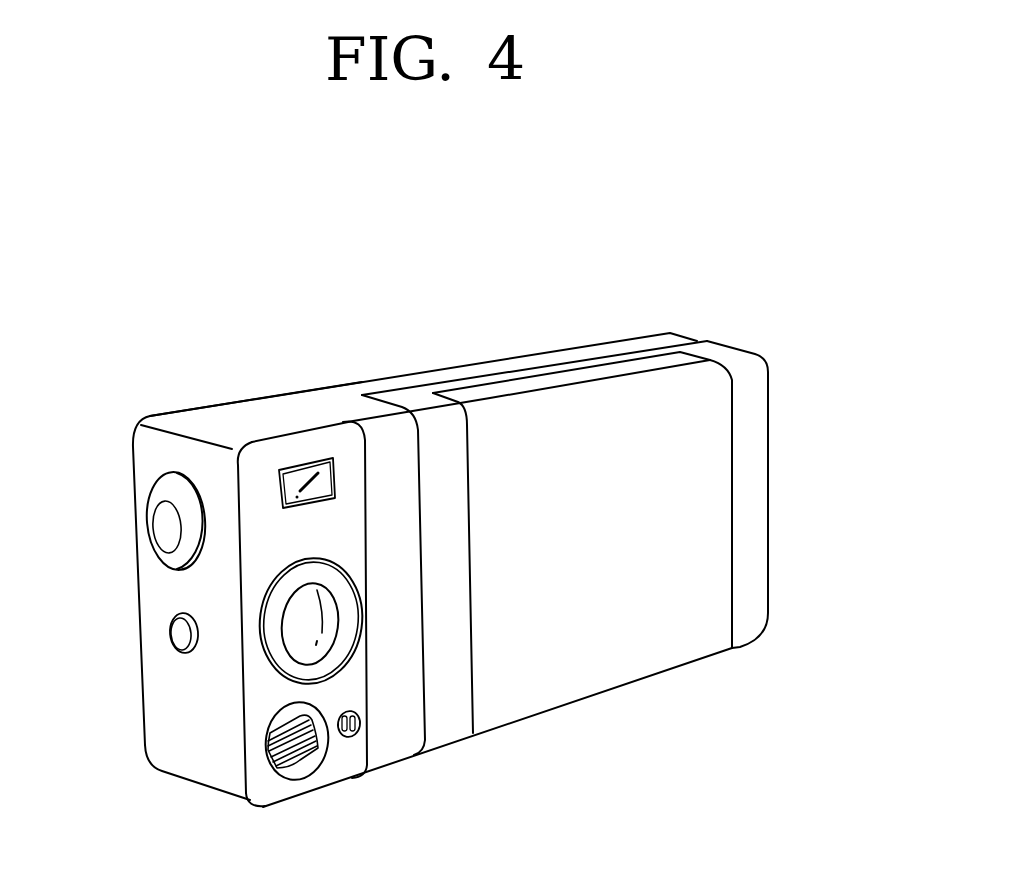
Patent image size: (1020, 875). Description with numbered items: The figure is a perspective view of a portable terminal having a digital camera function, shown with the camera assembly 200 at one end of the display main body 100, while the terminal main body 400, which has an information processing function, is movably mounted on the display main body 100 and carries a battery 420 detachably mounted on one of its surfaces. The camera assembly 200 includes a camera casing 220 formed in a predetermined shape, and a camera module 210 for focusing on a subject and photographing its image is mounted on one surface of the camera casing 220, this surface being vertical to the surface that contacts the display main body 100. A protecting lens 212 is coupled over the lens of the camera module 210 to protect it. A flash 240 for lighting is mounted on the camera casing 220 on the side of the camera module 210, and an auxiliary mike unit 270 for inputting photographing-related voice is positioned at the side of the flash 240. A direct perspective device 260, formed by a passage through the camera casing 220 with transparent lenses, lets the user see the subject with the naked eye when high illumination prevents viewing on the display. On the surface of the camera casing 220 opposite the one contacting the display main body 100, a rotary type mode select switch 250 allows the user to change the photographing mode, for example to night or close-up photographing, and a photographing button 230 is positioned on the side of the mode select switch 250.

The display main body 100 is at (505, 350).
The camera assembly 200 is at (181, 402).
The camera module 210 is at (376, 636).
The protecting lens 212 is at (328, 622).
The camera casing 220 is at (257, 413).
The photographing button 230 is at (181, 635).
The flash 240 is at (302, 753).
The mode select switch 250 is at (165, 533).
The direct perspective device 260 is at (327, 448).
The auxiliary mike unit 270 is at (347, 735).
The terminal main body 400 is at (782, 447).
The battery 420 is at (600, 615).